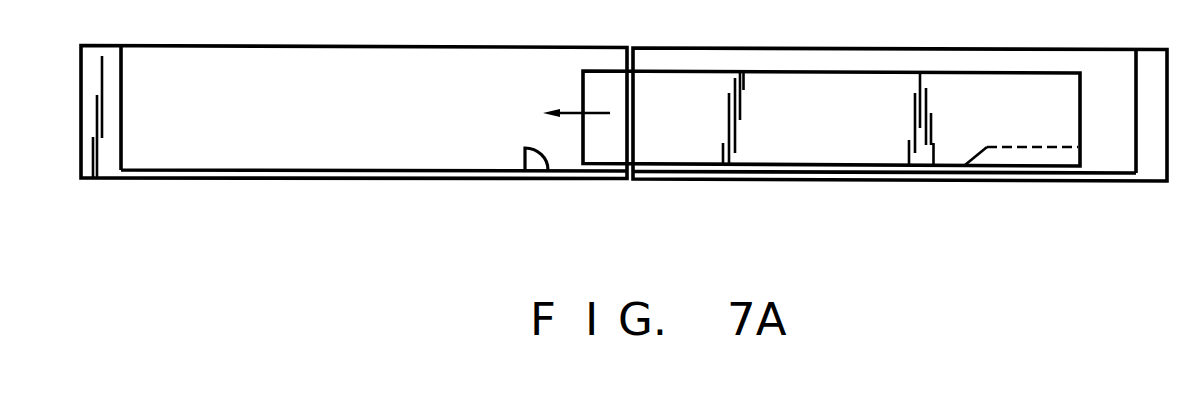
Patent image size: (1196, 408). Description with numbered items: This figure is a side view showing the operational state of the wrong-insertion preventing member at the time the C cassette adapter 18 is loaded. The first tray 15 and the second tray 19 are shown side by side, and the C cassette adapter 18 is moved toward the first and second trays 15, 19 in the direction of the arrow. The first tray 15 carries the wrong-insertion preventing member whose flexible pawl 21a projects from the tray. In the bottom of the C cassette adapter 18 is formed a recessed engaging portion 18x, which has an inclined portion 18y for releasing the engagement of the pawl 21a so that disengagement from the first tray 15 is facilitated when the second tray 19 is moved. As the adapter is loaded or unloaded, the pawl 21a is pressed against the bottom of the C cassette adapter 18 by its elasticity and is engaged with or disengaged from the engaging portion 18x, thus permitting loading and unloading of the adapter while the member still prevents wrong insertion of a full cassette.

The first tray 15 is at (328, 178).
The C cassette adapter 18 is at (933, 72).
The recessed engaging portion 18x is at (1062, 148).
The inclined portion 18y is at (982, 151).
The second tray 19 is at (1135, 182).
The pawl 21a is at (526, 160).